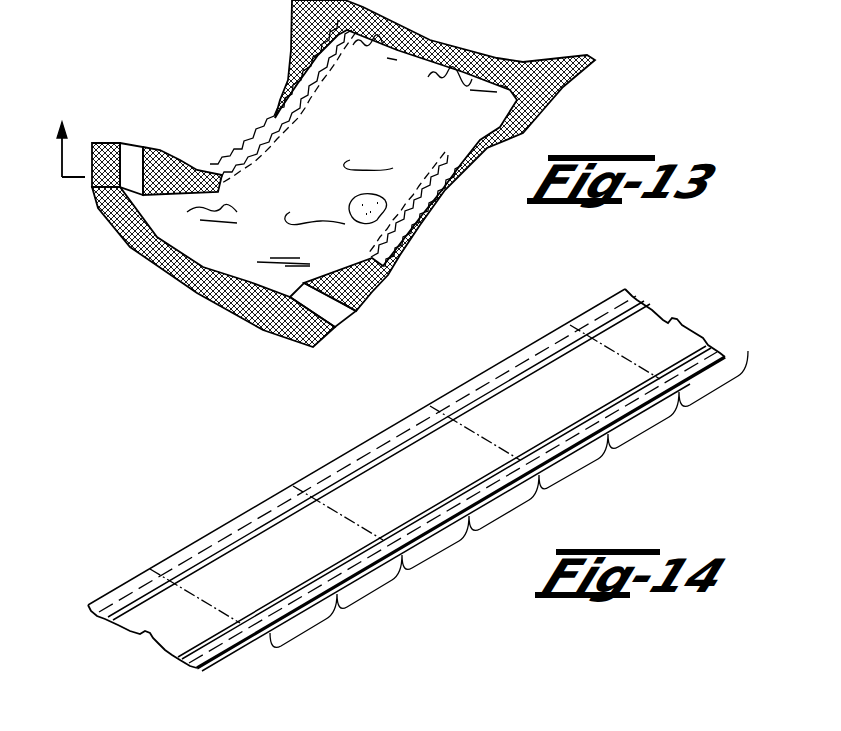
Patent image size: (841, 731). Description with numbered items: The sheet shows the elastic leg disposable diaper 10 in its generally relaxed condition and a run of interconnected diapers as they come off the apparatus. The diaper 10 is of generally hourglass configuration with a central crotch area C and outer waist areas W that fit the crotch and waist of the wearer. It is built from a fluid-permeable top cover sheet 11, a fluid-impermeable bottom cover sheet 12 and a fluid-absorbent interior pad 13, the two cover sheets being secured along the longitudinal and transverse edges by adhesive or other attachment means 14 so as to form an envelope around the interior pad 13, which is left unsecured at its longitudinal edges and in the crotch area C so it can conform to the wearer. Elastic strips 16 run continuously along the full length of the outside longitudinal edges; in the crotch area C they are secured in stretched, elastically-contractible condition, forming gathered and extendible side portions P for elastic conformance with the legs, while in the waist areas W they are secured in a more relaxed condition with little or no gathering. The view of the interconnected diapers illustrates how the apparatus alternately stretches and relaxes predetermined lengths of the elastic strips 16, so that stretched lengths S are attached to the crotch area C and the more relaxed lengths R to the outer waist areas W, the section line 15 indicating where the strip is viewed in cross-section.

In FIG. 13, the elastic leg disposable diaper 10 is at (213, 92).
In FIG. 14, the elastic leg disposable diaper 10 is at (418, 488).
In FIG. 13, the top cover sheet 11 is at (412, 155).
In FIG. 14, the bottom cover sheet 12 is at (150, 640).
In FIG. 13, the interior pad 13 is at (405, 232).
In FIG. 13, the attachment means 14 is at (296, 30).
In FIG. 13, the section line 15 is at (61, 167).
In FIG. 13, the elastic strips 16 is at (213, 168).
In FIG. 14, the elastic strips 16 is at (190, 568).
In FIG. 13, the gathered and extendible side portions P is at (251, 149).
In FIG. 13, the outer waist areas W is at (417, 91).
In FIG. 13, the central crotch area C is at (328, 189).
In FIG. 14, the relaxed lengths R is at (509, 515).
In FIG. 14, the stretched lengths S is at (503, 561).